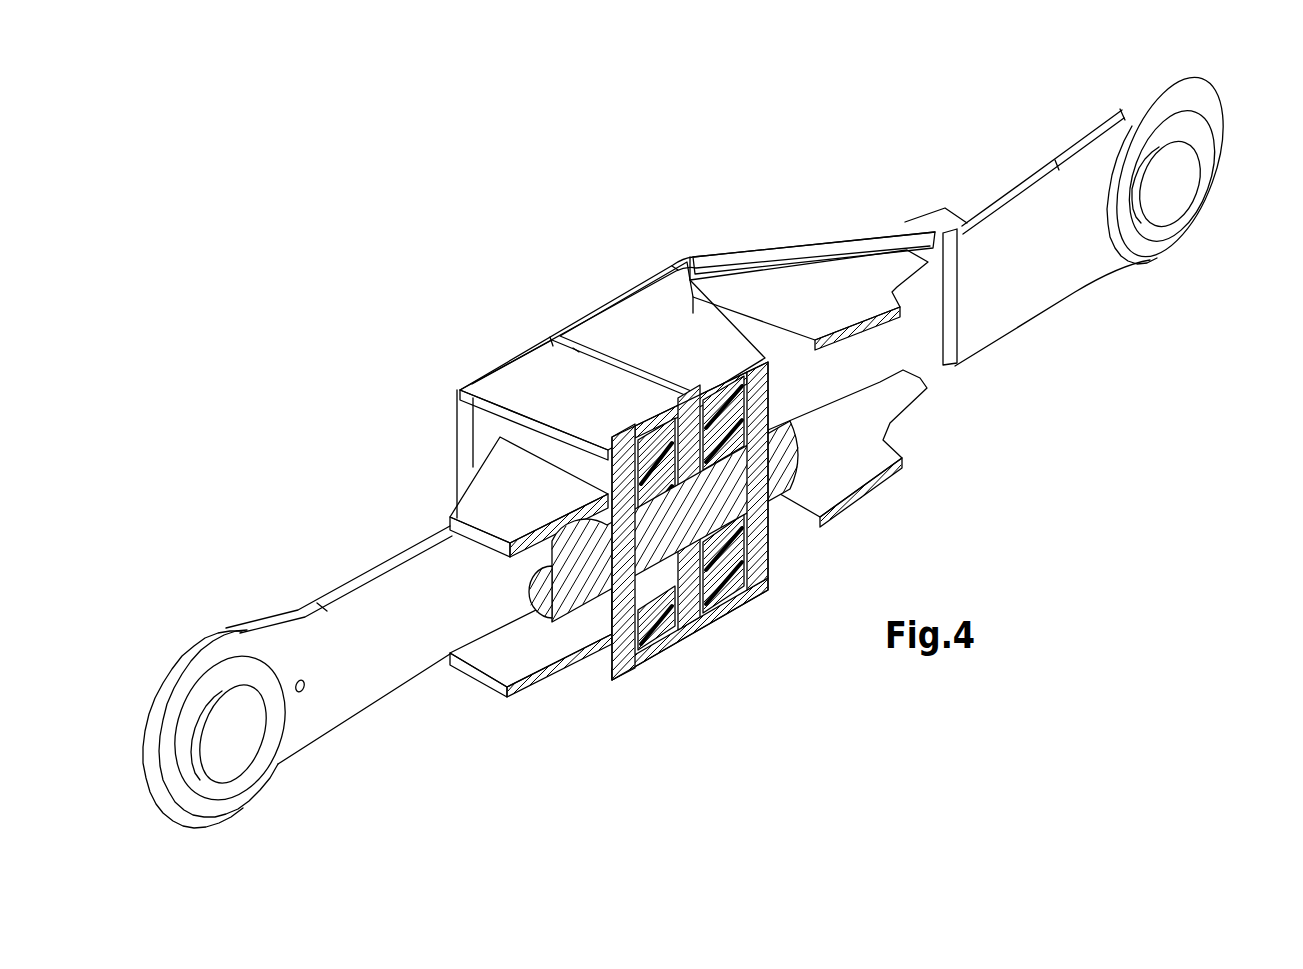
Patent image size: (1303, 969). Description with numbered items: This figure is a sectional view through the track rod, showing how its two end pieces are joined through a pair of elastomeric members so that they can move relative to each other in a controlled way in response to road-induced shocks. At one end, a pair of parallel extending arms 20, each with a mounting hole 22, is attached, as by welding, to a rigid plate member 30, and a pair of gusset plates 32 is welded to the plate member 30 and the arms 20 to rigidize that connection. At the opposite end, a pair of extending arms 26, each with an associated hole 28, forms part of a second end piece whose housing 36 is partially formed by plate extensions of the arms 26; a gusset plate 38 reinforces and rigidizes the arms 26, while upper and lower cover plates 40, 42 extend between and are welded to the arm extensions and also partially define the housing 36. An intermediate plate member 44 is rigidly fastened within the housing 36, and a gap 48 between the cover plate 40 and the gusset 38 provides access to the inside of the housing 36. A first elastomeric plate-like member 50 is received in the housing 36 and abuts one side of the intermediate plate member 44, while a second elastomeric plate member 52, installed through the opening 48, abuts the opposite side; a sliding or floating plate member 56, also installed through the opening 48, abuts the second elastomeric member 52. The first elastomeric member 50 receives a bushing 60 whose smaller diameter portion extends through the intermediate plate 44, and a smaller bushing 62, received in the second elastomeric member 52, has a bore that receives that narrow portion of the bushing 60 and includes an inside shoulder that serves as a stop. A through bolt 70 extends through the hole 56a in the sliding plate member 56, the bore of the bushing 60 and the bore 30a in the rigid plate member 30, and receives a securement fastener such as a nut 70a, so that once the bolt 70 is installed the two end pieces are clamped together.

The arms 20 is at (360, 665).
The mounting hole 22 is at (247, 733).
The arms 26 is at (1057, 262).
The hole 28 is at (1180, 183).
The rigid plate member 30 is at (637, 657).
The bore 30a is at (604, 585).
The gusset plates 32 is at (498, 498).
The housing 36 is at (651, 250).
The gusset plate 38 is at (806, 308).
The upper cover plate 40 is at (643, 346).
The lower cover plate 42 is at (544, 399).
The intermediate plate member 44 is at (707, 622).
The gap 48 is at (737, 310).
The first elastomeric plate-like member 50 is at (640, 607).
The second elastomeric plate member 52 is at (770, 593).
The sliding or floating plate member 56 is at (770, 550).
The hole 56a is at (847, 498).
The bushing 60 is at (650, 440).
The smaller bushing 62 is at (765, 410).
The through bolt 70 is at (775, 462).
The nut 70a is at (548, 570).